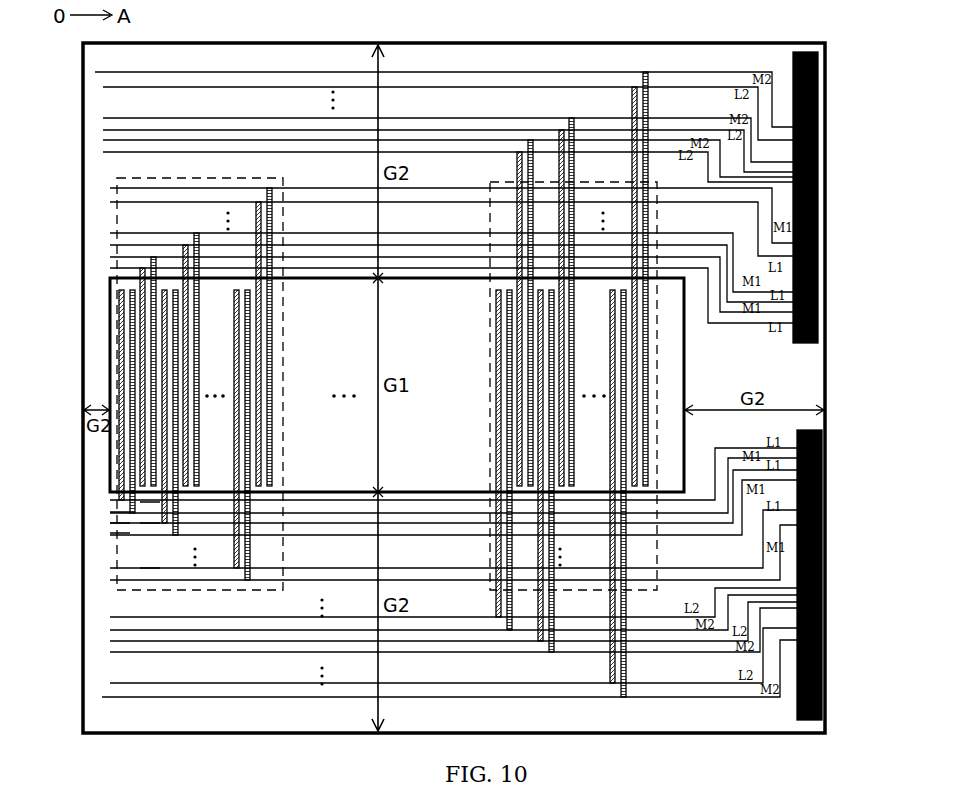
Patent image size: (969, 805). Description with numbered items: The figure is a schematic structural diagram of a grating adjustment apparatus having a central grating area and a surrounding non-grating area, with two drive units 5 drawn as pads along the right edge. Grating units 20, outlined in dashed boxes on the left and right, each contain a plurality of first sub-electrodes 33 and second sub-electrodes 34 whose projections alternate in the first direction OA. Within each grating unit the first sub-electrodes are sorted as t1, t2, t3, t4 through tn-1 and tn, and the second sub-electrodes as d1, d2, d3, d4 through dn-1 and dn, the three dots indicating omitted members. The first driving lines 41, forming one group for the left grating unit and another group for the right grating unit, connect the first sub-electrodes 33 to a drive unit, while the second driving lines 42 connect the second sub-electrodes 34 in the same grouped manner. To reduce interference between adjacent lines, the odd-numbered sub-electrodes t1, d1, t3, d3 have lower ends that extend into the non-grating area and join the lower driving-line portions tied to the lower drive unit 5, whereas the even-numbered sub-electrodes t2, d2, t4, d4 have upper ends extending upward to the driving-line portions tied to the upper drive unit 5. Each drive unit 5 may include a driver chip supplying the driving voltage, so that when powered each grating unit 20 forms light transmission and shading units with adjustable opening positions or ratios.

The drive unit 5 is at (803, 150).
The grating unit 20 is at (273, 177).
The first sub-electrode 33 is at (640, 482).
The second sub-electrode 34 is at (645, 454).
The first driving line 41 is at (123, 580).
The second driving line 42 is at (118, 582).
The first sub-electrode with ordinal number one t1 is at (120, 295).
The second sub-electrode with ordinal number one d1 is at (133, 310).
The first sub-electrode with ordinal number two t2 is at (144, 318).
The second sub-electrode with ordinal number two d2 is at (151, 328).
The first sub-electrode with ordinal number three t3 is at (161, 338).
The second sub-electrode with ordinal number three d3 is at (174, 350).
The first sub-electrode with ordinal number four t4 is at (185, 356).
The second sub-electrode with ordinal number four d4 is at (196, 363).
The first sub-electrode with ordinal number n-1 tn-1 is at (234, 408).
The second sub-electrode with ordinal number n-1 dn-1 is at (247, 420).
The first sub-electrode with ordinal number n tn is at (258, 437).
The second sub-electrode with ordinal number n dn is at (268, 452).